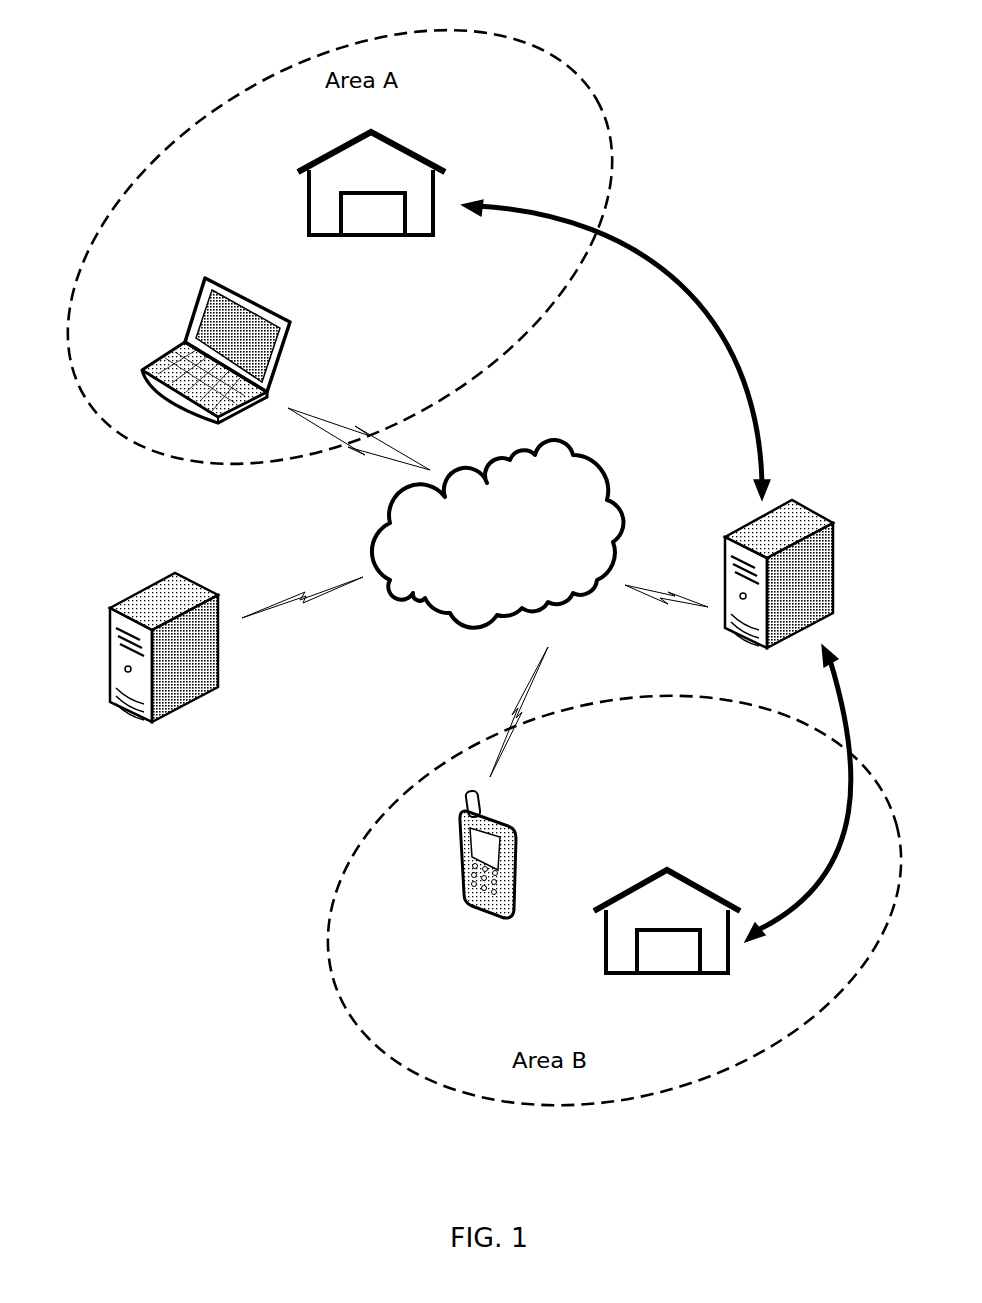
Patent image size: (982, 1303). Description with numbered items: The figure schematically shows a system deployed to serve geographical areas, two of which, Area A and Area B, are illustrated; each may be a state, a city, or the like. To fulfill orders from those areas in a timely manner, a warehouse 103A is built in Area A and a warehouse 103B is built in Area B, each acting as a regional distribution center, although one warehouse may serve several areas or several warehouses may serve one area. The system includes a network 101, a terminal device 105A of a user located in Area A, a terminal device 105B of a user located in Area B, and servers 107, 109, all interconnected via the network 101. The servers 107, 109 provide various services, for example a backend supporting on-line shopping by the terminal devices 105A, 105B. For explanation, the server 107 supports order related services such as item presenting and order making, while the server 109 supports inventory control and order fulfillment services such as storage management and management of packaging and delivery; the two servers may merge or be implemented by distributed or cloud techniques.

The network 101 is at (498, 534).
The warehouse 103A is at (418, 153).
The terminal device 105A is at (288, 370).
The server 107 is at (203, 592).
The server 109 is at (810, 505).
The warehouse 103B is at (525, 850).
The terminal device 105B is at (685, 877).